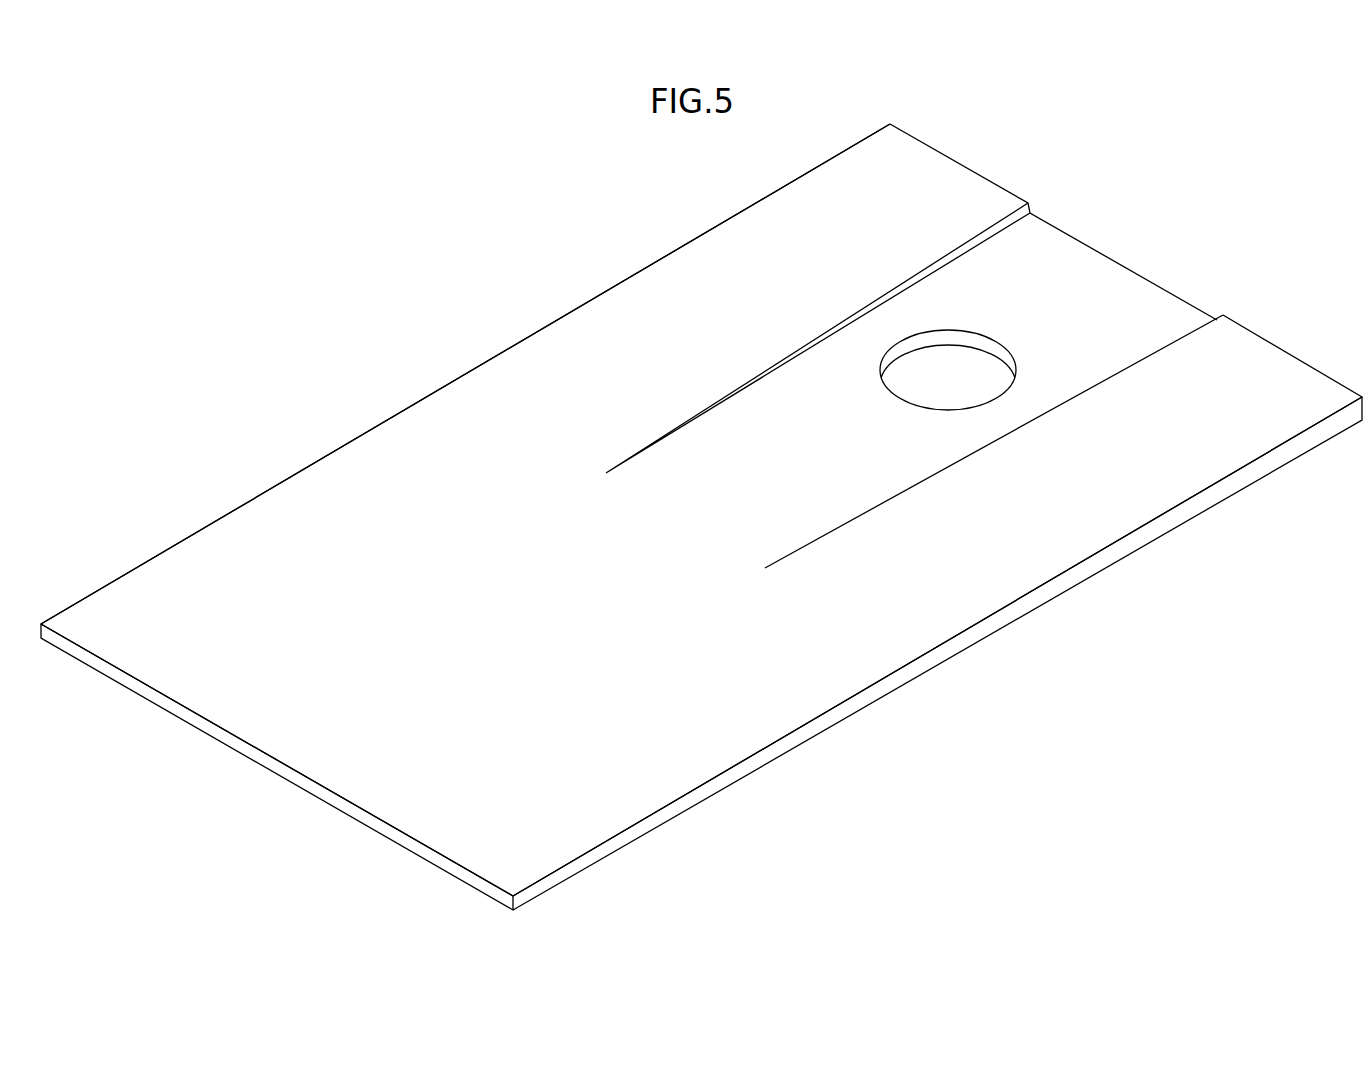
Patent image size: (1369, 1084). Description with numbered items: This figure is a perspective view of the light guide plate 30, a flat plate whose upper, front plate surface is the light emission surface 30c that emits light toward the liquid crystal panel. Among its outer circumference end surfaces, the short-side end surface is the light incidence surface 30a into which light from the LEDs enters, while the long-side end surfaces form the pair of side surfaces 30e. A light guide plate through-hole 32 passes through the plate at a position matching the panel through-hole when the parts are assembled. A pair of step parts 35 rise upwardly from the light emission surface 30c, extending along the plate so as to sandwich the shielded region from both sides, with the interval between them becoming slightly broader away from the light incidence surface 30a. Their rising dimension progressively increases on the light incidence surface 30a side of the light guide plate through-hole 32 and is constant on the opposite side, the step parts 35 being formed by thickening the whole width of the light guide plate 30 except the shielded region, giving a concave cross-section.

The light guide plate 30 is at (520, 278).
The light incidence surface 30a is at (372, 822).
The light emission surface 30c is at (240, 567).
The side surfaces 30e is at (890, 685).
The light guide plate through-hole 32 is at (977, 405).
The step parts 35 is at (975, 236).